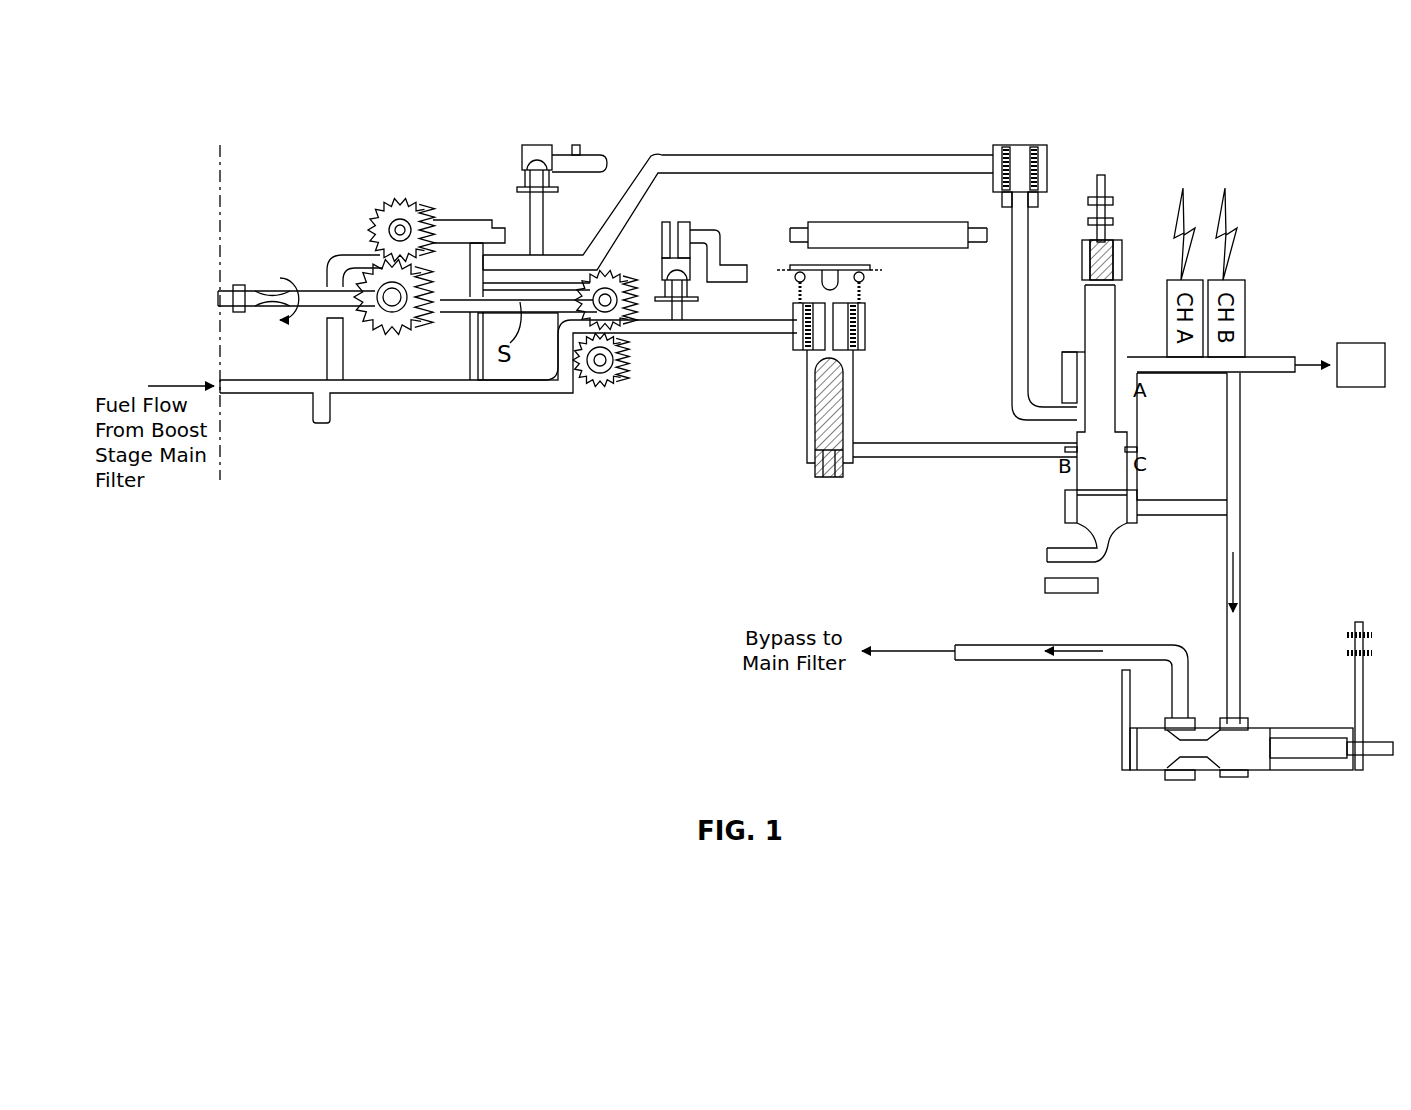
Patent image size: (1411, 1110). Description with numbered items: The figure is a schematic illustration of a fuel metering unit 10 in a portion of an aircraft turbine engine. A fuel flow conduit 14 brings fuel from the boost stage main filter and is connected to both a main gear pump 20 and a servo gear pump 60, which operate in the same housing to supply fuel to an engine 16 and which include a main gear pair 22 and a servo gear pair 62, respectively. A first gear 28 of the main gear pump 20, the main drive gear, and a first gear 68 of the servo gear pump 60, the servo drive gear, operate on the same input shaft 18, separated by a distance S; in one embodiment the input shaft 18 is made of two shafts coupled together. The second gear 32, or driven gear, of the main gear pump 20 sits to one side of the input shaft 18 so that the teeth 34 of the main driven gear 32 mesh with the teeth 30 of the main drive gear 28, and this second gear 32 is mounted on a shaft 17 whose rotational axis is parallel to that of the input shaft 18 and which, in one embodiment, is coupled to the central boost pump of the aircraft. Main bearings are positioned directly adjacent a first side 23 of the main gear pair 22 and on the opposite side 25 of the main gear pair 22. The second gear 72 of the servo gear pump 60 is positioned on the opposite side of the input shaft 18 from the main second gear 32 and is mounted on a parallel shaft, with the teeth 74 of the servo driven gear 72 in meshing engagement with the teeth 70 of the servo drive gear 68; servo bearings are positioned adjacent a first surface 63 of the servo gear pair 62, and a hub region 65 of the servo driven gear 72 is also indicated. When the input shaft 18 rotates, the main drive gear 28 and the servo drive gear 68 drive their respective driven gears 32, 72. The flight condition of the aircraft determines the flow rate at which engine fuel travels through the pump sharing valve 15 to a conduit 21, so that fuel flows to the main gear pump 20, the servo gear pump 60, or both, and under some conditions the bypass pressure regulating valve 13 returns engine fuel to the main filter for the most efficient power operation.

The fuel metering unit 10 is at (1232, 104).
The bypass pressure regulating valve 13 is at (900, 660).
The fuel flow conduit 14 is at (273, 395).
The pump sharing valve 15 is at (1117, 530).
The engine 16 is at (1360, 343).
The shaft 17 is at (463, 228).
The input shaft 18 is at (318, 293).
The main gear pump 20 is at (334, 128).
The conduit 21 is at (1241, 470).
The main gear pair 22 is at (380, 203).
The first side of the main gear pair 23 is at (362, 326).
The opposite side of the main gear pair 25 is at (440, 314).
The first gear of the main gear pump 28 is at (380, 332).
The teeth of the main drive gear 30 is at (398, 340).
The second gear of the main gear pump 32 is at (397, 203).
The teeth of the main driven gear 34 is at (418, 200).
The servo gear pump 60 is at (665, 412).
The servo gear pair 62 is at (621, 390).
The first surface of the servo gear pair 63 is at (637, 315).
The hub 65 is at (585, 380).
The first gear of the servo gear pump 68 is at (600, 275).
The teeth of the servo drive gear 70 is at (618, 270).
The second gear of the servo gear pump 72 is at (603, 388).
The teeth of the servo driven gear 74 is at (620, 386).